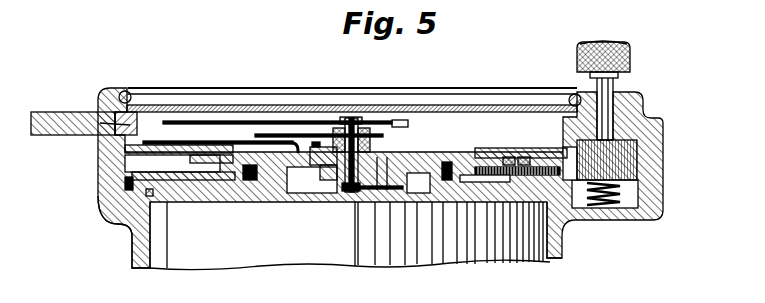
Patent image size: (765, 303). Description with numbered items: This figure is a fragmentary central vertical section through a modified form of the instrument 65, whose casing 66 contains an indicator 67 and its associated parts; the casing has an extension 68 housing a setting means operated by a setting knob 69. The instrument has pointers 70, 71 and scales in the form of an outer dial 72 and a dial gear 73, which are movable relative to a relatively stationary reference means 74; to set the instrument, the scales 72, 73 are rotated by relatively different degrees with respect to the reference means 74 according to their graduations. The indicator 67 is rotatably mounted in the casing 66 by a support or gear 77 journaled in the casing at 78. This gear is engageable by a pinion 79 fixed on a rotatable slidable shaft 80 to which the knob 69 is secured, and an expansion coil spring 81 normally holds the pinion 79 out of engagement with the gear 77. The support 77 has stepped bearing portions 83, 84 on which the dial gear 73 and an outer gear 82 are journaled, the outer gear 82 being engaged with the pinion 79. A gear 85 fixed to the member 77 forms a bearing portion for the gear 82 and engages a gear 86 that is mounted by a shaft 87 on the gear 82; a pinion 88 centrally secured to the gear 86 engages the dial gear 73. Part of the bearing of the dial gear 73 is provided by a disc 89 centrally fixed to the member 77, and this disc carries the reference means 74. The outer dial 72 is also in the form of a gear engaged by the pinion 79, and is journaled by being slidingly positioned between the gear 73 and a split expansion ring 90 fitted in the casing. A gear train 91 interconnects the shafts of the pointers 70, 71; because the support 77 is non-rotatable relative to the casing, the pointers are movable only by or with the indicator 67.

The instrument 65 is at (425, 272).
The casing 66 is at (138, 246).
The indicator 67 is at (350, 248).
The extension 68 is at (653, 194).
The setting knob 69 is at (631, 54).
The pointer 70 is at (213, 122).
The pointer 71 is at (280, 133).
The outer dial 72 is at (482, 147).
The dial gear 73 is at (427, 152).
The reference means 74 is at (153, 140).
The support or gear 77 is at (200, 188).
The journal 78 is at (148, 193).
The pinion 79 is at (624, 162).
The rotatable slidable shaft 80 is at (604, 115).
The expansion coil spring 81 is at (615, 223).
The outer gear 82 is at (222, 175).
The stepped bearing portion 83 is at (253, 180).
The stepped bearing portion 84 is at (297, 201).
The gear 85 is at (238, 148).
The gear 86 is at (548, 163).
The shaft 87 is at (533, 172).
The pinion 88 is at (530, 163).
The disc 89 is at (403, 147).
The split expansion ring 90 is at (87, 108).
The gear train 91 is at (330, 192).